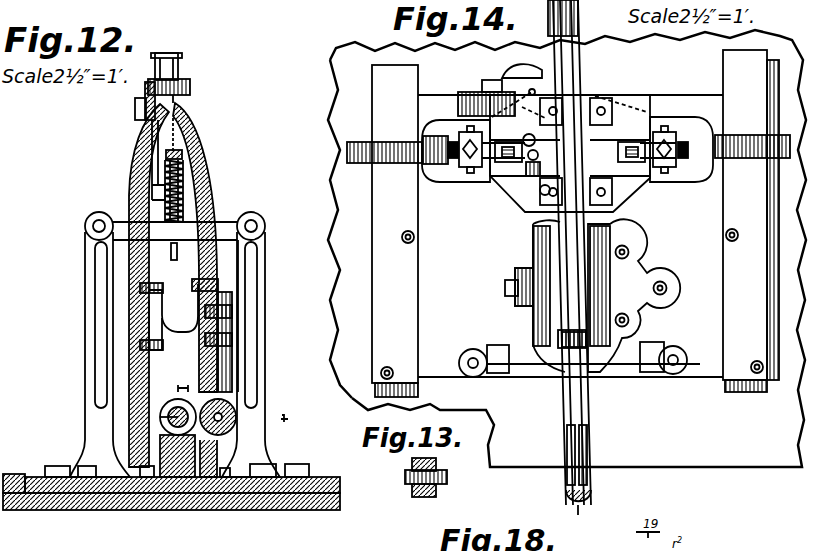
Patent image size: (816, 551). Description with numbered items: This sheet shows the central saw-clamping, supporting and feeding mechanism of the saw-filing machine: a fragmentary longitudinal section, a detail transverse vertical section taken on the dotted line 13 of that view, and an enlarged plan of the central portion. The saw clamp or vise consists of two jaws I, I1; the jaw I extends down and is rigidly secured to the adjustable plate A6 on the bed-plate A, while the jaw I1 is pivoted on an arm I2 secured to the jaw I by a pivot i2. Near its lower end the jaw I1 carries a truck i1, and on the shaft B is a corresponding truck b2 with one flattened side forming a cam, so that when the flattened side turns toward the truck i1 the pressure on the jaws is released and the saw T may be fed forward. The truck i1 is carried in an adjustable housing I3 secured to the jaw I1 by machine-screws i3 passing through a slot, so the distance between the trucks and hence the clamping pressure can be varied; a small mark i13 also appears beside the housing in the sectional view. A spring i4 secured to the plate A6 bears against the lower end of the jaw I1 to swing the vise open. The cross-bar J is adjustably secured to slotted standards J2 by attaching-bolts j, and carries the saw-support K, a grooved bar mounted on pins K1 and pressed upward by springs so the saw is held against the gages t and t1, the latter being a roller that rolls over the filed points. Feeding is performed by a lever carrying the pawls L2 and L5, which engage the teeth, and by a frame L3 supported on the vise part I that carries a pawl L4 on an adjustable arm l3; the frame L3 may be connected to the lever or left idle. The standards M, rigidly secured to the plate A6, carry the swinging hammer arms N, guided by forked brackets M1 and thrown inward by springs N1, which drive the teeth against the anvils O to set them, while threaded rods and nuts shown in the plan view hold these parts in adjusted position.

In FIG. 12, the bed-plate A is at (310, 497).
In FIG. 14, the bed-plate A is at (733, 460).
In FIG. 12, the adjustable plate A6 is at (318, 477).
In FIG. 14, the adjustable plate A6 is at (681, 96).
In FIG. 12, the shaft B is at (160, 418).
In FIG. 14, the shaft B is at (615, 490).
In FIG. 12, the jaw of saw clamp or vise I is at (133, 182).
In FIG. 14, the jaw of saw clamp or vise I is at (596, 278).
In FIG. 12, the jaw of saw clamp or vise I1 is at (217, 184).
In FIG. 14, the jaw of saw clamp or vise I1 is at (550, 250).
In FIG. 13, the jaw of saw clamp or vise I1 is at (415, 490).
In FIG. 12, the arm I2 is at (198, 300).
In FIG. 12, the adjustable housing I3 is at (232, 375).
In FIG. 14, the adjustable housing I3 is at (520, 306).
In FIG. 13, the adjustable housing I3 is at (437, 492).
In FIG. 12, the truck i1 is at (238, 410).
In FIG. 14, the truck i1 is at (570, 326).
In FIG. 13, the truck i1 is at (447, 474).
In FIG. 12, the pivot i2 is at (212, 276).
In FIG. 12, the machine-screws i3 is at (232, 310).
In FIG. 14, the machine-screws i3 is at (506, 290).
In FIG. 12, the spring i4 is at (214, 466).
In FIG. 12, the pin i13 is at (290, 414).
In FIG. 12, the cross-bar J is at (125, 228).
In FIG. 14, the cross-bar J is at (552, 378).
In FIG. 12, the standards J2 is at (90, 322).
In FIG. 14, the standards J2 is at (485, 348).
In FIG. 12, the attaching-bolts j is at (92, 232).
In FIG. 12, the saw-support K is at (184, 156).
In FIG. 12, the pins K1 is at (175, 261).
In FIG. 14, the pawl L2 is at (577, 60).
In FIG. 12, the frame L3 is at (152, 66).
In FIG. 14, the frame L3 is at (582, 78).
In FIG. 12, the pawl L4 is at (178, 62).
In FIG. 14, the pawl L4 is at (567, 444).
In FIG. 14, the pawl L5 is at (604, 220).
In FIG. 14, the arm l3 is at (589, 445).
In FIG. 14, the standards M is at (620, 103).
In FIG. 14, the forked brackets M1 is at (440, 125).
In FIG. 14, the hammers N is at (444, 183).
In FIG. 14, the springs N1 is at (390, 145).
In FIG. 14, the anvils O is at (647, 205).
In FIG. 12, the saw T is at (176, 100).
In FIG. 14, the saw T is at (578, 514).
In FIG. 14, the gage t is at (542, 200).
In FIG. 12, the gage t1 is at (182, 82).
In FIG. 14, the gage t1 is at (570, 326).
In FIG. 12, the truck b2 is at (172, 398).
In FIG. 12, the section line 13 is at (184, 388).